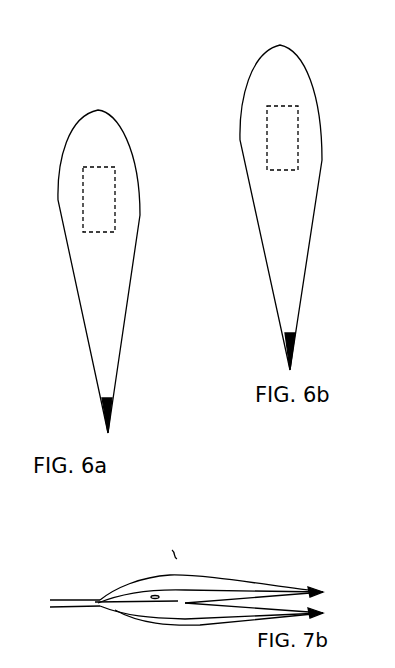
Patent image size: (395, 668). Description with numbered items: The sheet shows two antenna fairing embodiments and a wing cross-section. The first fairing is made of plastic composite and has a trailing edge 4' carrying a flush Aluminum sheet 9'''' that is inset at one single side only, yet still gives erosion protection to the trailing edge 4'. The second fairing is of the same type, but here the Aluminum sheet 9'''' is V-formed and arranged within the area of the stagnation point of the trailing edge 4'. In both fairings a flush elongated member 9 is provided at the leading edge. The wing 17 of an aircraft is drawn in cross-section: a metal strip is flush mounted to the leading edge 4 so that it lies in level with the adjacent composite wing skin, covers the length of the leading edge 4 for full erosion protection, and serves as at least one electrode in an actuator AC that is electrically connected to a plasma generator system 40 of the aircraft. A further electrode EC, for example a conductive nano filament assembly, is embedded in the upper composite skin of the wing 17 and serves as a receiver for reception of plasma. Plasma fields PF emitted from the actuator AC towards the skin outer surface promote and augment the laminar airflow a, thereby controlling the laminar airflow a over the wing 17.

In FIG. 6a, the flush elongated member 9 is at (99, 249).
In FIG. 6b, the flush elongated member 9 is at (282, 187).
In FIG. 6a, the Aluminum sheet 9'''' is at (131, 415).
In FIG. 6b, the Aluminum sheet 9'''' is at (319, 351).
In FIG. 7b, the Aluminum sheet 9'''' is at (186, 616).
In FIG. 6a, the trailing edge 4' is at (74, 419).
In FIG. 6b, the trailing edge 4' is at (247, 336).
In FIG. 7b, the leading edge 4 is at (88, 576).
In FIG. 7b, the plasma fields PF is at (143, 577).
In FIG. 7b, the electrode EC is at (147, 579).
In FIG. 7b, the wing 17 is at (194, 561).
In FIG. 7b, the laminar airflow a is at (212, 582).
In FIG. 7b, the actuator AC is at (143, 603).
In FIG. 7b, the plasma generator system 40 is at (184, 603).